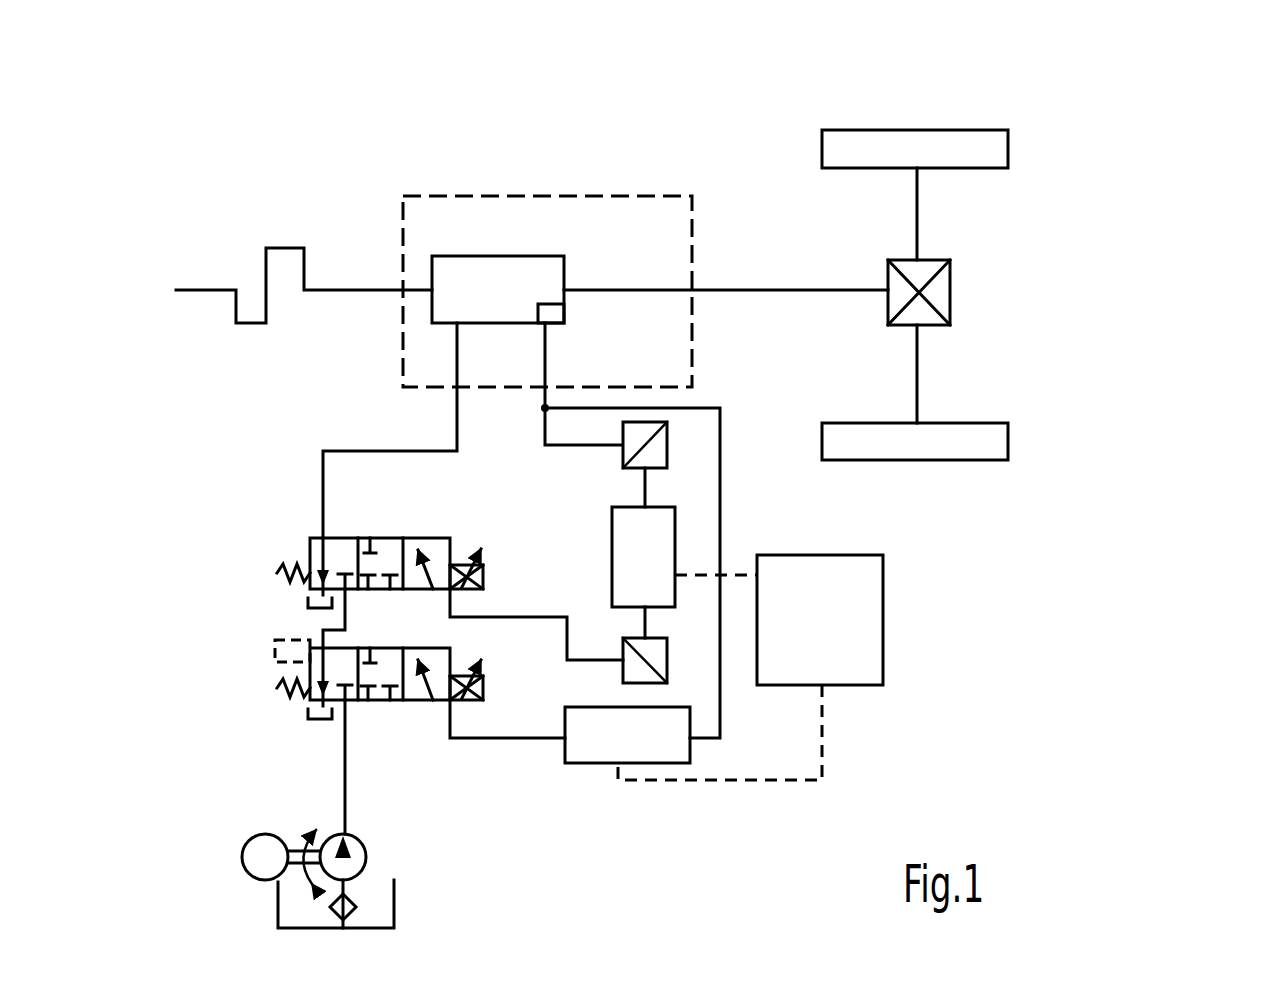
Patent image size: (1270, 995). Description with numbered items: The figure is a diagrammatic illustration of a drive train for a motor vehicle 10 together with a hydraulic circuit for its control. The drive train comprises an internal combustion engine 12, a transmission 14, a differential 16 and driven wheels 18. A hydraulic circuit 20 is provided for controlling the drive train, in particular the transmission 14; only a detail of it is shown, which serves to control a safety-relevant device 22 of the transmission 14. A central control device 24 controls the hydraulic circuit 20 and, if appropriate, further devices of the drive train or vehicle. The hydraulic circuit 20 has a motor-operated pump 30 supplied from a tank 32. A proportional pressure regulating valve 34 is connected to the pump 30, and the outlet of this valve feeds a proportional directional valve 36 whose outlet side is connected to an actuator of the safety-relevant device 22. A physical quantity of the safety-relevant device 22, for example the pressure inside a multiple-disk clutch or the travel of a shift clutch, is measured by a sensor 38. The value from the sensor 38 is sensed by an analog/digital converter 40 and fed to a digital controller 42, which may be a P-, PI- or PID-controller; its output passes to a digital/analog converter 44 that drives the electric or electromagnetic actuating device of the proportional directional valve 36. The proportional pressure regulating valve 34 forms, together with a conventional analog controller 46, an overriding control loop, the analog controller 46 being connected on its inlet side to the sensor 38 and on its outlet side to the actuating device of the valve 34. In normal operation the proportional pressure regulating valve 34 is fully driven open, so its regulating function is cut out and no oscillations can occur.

The motor vehicle 10 is at (1094, 208).
The internal combustion engine 12 is at (250, 323).
The transmission 14 is at (488, 196).
The differential 16 is at (950, 283).
The driven wheels 18 is at (1008, 145).
The hydraulic circuit 20 is at (243, 547).
The safety-relevant device 22 is at (537, 256).
The central control device 24 is at (883, 610).
The pump 30 is at (366, 843).
The tank 32 is at (394, 897).
The proportional pressure regulating valve 34 is at (253, 674).
The proportional directional valve 36 is at (250, 585).
The sensor 38 is at (552, 312).
The analog/digital converter 40 is at (627, 453).
The digital controller 42 is at (612, 535).
The digital/analog converter 44 is at (623, 665).
The analog controller 46 is at (595, 763).